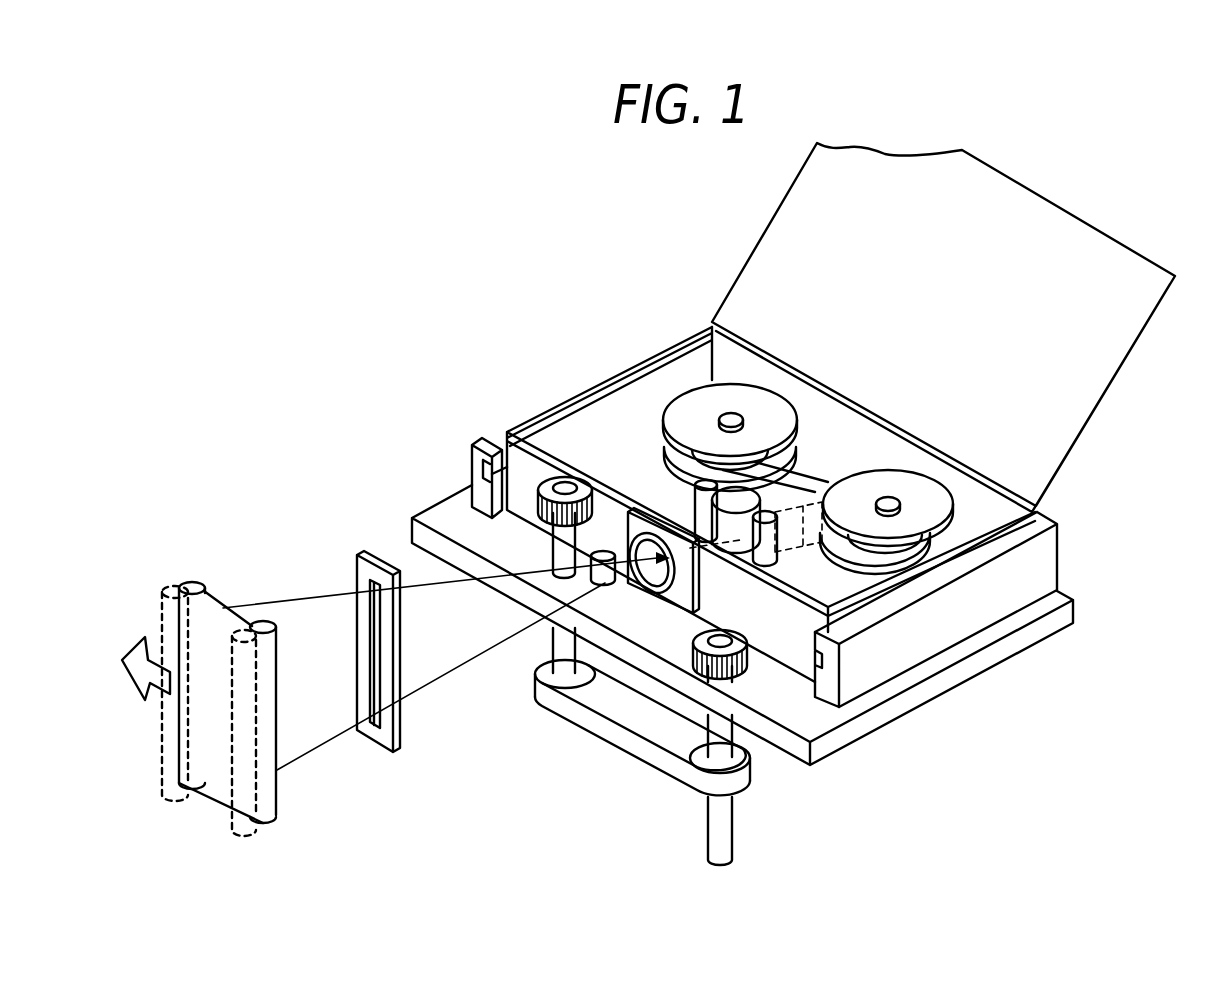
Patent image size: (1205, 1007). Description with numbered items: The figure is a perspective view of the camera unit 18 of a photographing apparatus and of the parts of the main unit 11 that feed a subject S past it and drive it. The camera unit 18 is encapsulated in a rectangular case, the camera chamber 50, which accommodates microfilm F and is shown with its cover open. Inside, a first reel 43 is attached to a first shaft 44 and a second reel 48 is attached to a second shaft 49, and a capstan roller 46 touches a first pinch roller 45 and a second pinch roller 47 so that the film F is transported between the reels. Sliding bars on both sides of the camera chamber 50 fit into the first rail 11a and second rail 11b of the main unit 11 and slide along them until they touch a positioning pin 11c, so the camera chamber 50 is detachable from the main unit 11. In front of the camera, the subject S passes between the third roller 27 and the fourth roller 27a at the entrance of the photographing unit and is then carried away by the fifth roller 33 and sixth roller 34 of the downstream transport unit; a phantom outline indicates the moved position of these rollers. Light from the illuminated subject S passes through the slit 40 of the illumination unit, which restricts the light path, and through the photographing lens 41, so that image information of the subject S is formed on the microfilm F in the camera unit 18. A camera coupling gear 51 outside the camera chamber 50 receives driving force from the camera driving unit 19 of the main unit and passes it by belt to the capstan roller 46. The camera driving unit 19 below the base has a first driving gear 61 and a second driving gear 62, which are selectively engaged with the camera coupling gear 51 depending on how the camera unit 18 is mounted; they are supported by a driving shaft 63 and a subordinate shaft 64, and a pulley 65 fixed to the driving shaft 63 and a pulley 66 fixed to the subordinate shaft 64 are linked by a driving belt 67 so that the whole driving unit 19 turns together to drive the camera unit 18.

The main unit 11 is at (416, 514).
The first rail 11a is at (482, 446).
The right guide wall 11b is at (1045, 543).
The positioning pin 11c is at (608, 583).
The camera unit 18 is at (623, 263).
The camera driving unit 19 is at (604, 752).
The third roller 27 is at (278, 818).
The fourth roller 27a is at (256, 830).
The fifth roller 33 is at (192, 582).
The sixth roller 34 is at (162, 592).
The slit 40 is at (398, 748).
The photographing lens 41 is at (652, 596).
The first reel 43 is at (682, 413).
The first shaft 44 is at (723, 412).
The first pinch roller 45 is at (665, 445).
The capstan roller 46 is at (752, 562).
The second pinch roller 47 is at (773, 543).
The second reel 48 is at (917, 552).
The second shaft 49 is at (898, 506).
The camera chamber 50 is at (1040, 500).
The camera coupling gear 51 is at (825, 712).
The first driving gear 61 is at (740, 700).
The second driving gear 62 is at (552, 470).
The driving shaft 63 is at (725, 828).
The subordinate shaft 64 is at (540, 672).
The pulley 65 is at (745, 770).
The pulley 66 is at (578, 692).
The driving belt 67 is at (640, 752).
The subject S is at (192, 706).
The microfilm F is at (800, 515).